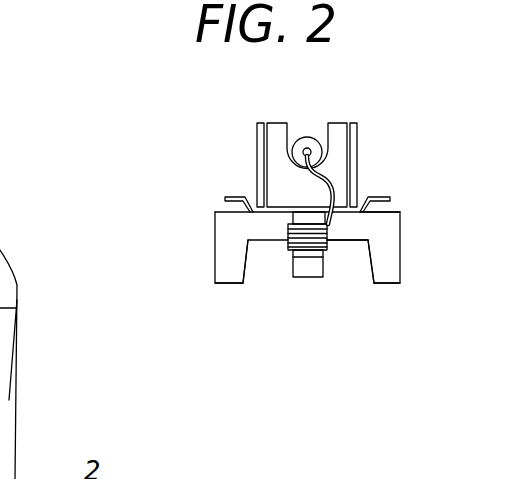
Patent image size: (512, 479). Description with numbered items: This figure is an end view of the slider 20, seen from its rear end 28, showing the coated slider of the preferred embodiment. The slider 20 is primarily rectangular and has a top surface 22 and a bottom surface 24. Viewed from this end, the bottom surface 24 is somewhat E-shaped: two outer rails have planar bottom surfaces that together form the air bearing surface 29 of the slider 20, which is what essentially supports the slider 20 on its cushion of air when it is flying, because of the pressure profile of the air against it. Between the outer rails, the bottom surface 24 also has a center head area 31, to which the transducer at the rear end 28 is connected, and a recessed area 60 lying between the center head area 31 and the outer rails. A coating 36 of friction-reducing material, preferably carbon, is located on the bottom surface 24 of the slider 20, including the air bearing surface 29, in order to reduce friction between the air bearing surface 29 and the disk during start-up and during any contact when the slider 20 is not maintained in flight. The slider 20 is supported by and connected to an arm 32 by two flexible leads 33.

The slider 20 is at (418, 171).
The top surface 22 is at (215, 211).
The bottom surface 24 is at (386, 246).
The rear end 28 is at (388, 222).
The air bearing surface 29 is at (219, 273).
The center head area 31 is at (310, 263).
The arm 32 is at (358, 148).
The flexible leads 33 is at (237, 196).
The coating 36 is at (350, 241).
The recessed area 60 is at (257, 283).